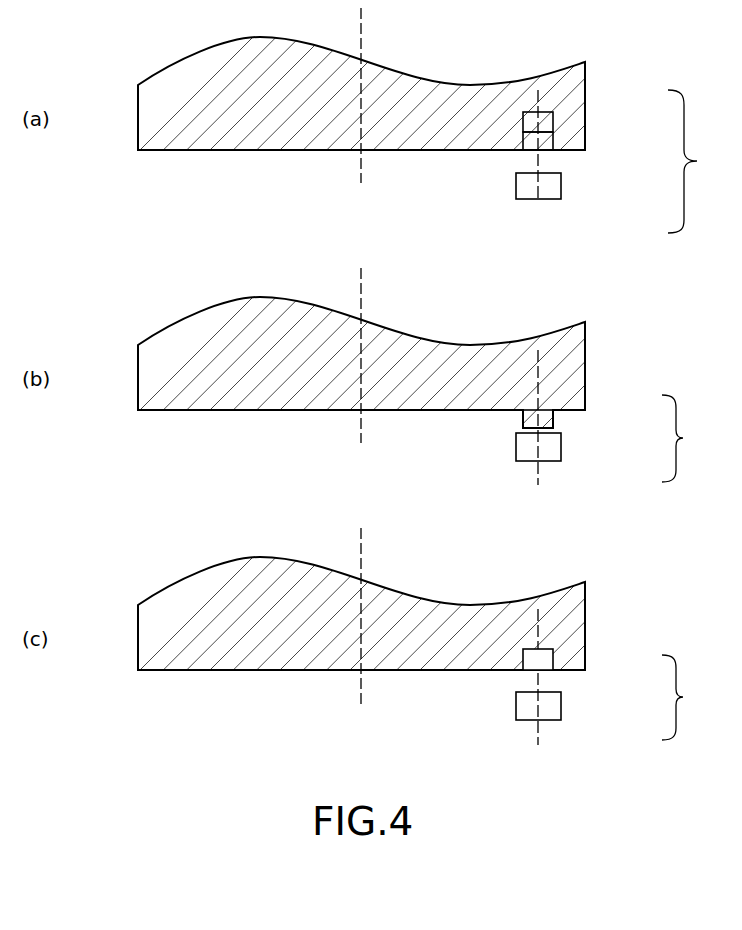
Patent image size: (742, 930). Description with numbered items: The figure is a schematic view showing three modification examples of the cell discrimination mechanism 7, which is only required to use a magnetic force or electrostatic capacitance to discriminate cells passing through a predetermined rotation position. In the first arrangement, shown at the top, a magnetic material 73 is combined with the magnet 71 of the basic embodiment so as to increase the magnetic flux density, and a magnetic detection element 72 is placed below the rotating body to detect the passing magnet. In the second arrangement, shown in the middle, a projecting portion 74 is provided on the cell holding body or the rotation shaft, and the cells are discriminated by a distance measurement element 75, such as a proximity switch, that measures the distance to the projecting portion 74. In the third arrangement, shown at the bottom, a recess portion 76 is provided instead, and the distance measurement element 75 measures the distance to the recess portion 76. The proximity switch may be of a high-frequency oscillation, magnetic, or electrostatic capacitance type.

The cell discrimination mechanism 7 is at (692, 415).
The magnet 71 is at (553, 122).
The magnetic detection element 72 is at (561, 187).
The magnetic material 73 is at (553, 142).
The projecting portion 74 is at (553, 422).
The distance measurement element 75 is at (561, 447).
The recess portion 76 is at (553, 660).